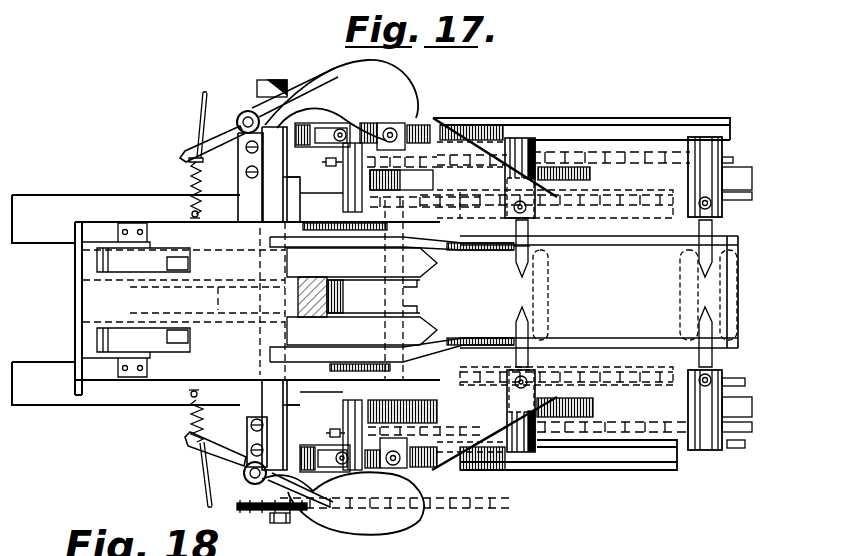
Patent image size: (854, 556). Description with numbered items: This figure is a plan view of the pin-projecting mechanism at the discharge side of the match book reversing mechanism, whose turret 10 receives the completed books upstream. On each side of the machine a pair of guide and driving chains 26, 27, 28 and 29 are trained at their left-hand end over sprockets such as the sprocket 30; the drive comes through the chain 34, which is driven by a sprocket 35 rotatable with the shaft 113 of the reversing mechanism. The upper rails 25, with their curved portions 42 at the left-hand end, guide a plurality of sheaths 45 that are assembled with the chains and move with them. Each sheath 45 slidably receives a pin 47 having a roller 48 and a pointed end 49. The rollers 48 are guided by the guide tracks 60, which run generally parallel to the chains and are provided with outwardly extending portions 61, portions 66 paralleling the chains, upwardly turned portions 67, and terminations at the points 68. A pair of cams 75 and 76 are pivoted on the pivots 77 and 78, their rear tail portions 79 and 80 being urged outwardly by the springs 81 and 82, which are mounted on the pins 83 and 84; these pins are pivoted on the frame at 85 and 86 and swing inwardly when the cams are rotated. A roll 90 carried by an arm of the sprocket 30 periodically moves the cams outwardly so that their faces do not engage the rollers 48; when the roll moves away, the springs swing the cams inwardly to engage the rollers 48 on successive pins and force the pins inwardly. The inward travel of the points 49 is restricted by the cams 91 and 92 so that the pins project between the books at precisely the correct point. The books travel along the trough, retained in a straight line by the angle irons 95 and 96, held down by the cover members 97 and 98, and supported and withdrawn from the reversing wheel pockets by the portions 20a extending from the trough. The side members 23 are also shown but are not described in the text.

The turret 10 is at (100, 283).
The trough portions 20a is at (430, 325).
The supporting arms 23 is at (31, 198).
The upper rails 25 is at (568, 168).
The guide and driving chain 26 is at (667, 432).
The guide and driving chain 27 is at (597, 377).
The guide and driving chain 28 is at (732, 187).
The guide and driving chain 29 is at (603, 150).
The sprocket 30 is at (332, 200).
The drive chain 34 is at (503, 508).
The sprocket 35 is at (265, 512).
The curved portions 42 is at (401, 180).
The sheath 45 is at (535, 140).
The pin 47 is at (700, 318).
The roller 48 is at (500, 248).
The pointed end 49 is at (525, 312).
The guide track 60 is at (707, 130).
The outwardly extending portions 61 is at (445, 115).
The track portions 66 is at (490, 130).
The upwardly turned portions 67 is at (288, 100).
The track terminations 68 is at (340, 128).
The cam 75 is at (385, 510).
The cam 76 is at (404, 80).
The pivot 77 is at (245, 490).
The pivot 78 is at (246, 110).
The tail portion 79 is at (190, 443).
The tail portion 80 is at (196, 153).
The spring 81 is at (190, 421).
The spring 82 is at (188, 168).
The pin 83 is at (205, 497).
The pin 84 is at (204, 92).
The frame pivot 85 is at (187, 394).
The frame pivot 86 is at (187, 211).
The roll 90 is at (390, 126).
The cam 91 is at (385, 357).
The cam 92 is at (385, 243).
The angle iron 95 is at (604, 246).
The angle iron 96 is at (628, 346).
The cover member 97 is at (186, 251).
The cover member 98 is at (190, 356).
The shaft 113 is at (270, 69).